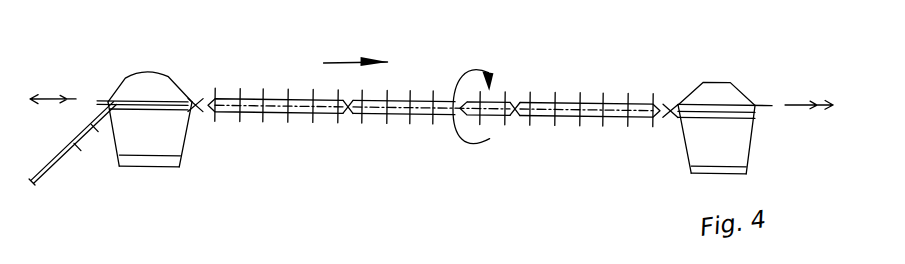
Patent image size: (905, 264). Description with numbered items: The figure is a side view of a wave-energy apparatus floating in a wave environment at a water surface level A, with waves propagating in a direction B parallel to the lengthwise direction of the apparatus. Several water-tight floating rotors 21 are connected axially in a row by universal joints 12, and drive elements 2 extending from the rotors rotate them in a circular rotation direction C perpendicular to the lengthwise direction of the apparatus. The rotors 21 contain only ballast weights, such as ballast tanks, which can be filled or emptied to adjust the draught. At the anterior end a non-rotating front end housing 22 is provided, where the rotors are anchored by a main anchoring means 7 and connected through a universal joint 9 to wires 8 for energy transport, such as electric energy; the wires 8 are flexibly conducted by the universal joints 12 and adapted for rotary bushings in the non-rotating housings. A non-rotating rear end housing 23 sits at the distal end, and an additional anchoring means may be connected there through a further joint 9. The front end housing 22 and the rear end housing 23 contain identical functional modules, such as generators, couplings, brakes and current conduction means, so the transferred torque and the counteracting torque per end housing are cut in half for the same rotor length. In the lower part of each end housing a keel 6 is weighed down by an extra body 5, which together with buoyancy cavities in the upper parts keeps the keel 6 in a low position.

The drive elements 2 is at (507, 85).
The extra body 5 is at (432, 179).
The keel 6 is at (431, 135).
The main anchoring means 7 is at (68, 136).
The wires 8 is at (72, 143).
The universal joint 9 is at (422, 122).
The universal joints 12 is at (439, 105).
The rotors 21 is at (276, 86).
The front end housing 22 is at (141, 75).
The rear end housing 23 is at (718, 79).
The water surface level A is at (432, 80).
The wave propagation direction B is at (355, 54).
The circular rotation direction C is at (461, 123).